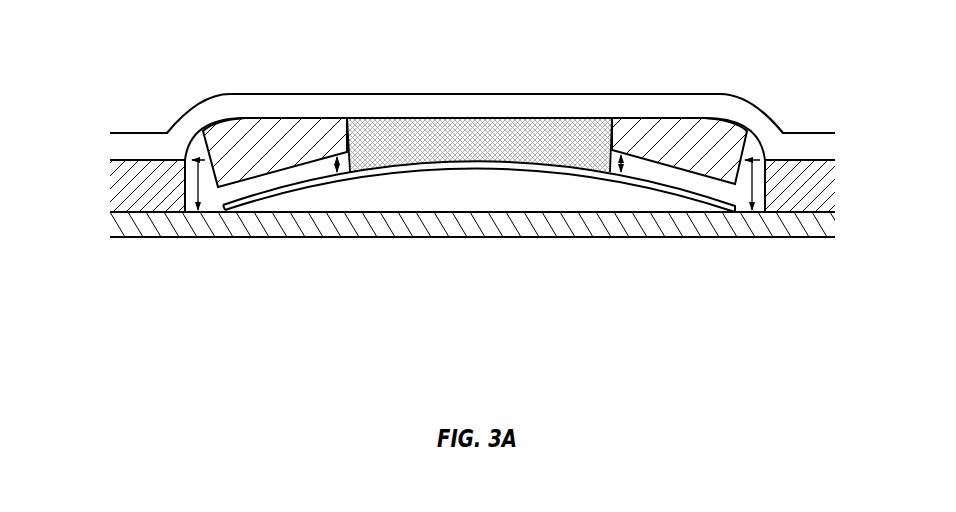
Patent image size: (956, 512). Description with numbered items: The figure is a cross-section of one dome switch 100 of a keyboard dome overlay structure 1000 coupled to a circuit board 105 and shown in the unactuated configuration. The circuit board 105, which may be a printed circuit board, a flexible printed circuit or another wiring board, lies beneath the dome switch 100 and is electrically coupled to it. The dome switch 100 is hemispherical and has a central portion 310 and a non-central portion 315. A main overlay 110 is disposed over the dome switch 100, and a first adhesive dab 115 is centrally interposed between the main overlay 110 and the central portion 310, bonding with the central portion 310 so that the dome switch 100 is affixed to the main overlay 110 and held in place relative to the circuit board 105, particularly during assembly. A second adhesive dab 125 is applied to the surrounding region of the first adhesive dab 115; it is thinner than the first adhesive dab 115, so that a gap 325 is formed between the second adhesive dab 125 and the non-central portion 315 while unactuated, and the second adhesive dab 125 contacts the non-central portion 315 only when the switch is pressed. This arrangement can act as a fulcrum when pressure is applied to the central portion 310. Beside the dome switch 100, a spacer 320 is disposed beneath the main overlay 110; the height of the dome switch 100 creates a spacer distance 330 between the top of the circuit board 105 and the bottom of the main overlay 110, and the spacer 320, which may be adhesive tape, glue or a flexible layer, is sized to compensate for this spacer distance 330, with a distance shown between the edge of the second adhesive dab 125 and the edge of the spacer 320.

The keyboard dome overlay structure 1000 is at (783, 21).
The main overlay 110 is at (146, 147).
The second adhesive dab 125 is at (230, 150).
The dome switch 100 is at (300, 187).
The first adhesive dab 115 is at (557, 148).
The central portion 310 is at (465, 163).
The non-central portion 315 is at (657, 193).
The spacer 320 is at (152, 185).
The circuit board 105 is at (280, 222).
The spacer distance 330 is at (196, 172).
The gap 325 is at (337, 158).